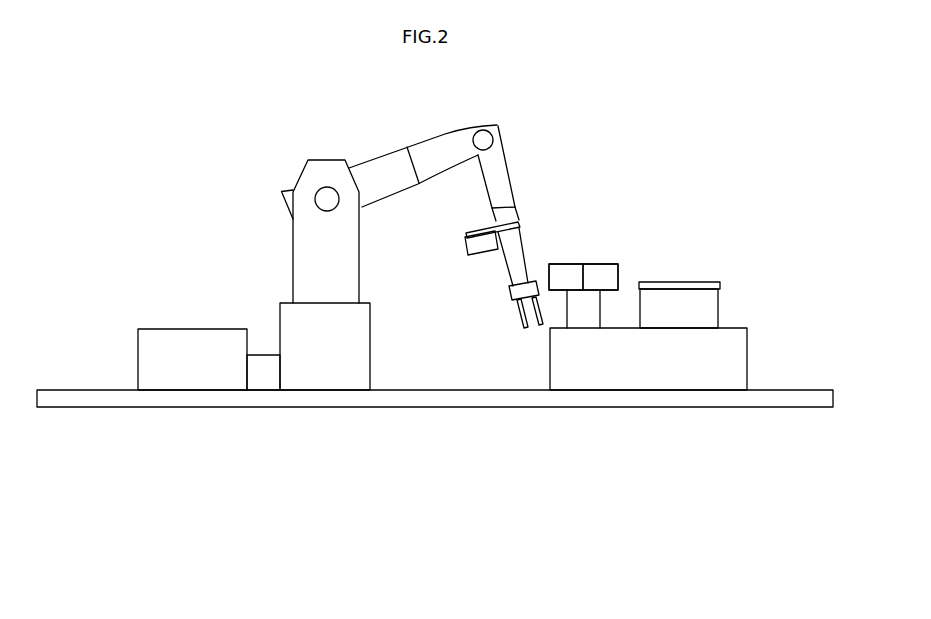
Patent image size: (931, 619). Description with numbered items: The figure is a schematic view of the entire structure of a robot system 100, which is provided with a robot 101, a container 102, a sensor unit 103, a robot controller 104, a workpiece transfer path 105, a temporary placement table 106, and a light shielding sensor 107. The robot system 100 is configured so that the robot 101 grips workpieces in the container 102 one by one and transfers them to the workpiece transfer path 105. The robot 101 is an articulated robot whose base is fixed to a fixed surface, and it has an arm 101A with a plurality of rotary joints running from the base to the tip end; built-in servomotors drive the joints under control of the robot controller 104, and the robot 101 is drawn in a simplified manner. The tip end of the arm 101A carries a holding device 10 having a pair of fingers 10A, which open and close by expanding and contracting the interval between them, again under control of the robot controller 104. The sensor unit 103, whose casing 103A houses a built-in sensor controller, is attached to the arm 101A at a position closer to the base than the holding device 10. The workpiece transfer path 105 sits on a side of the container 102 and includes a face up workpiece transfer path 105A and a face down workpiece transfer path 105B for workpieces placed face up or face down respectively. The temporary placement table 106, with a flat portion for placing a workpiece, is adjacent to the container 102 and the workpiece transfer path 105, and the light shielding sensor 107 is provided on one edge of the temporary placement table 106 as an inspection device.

The robot system 100 is at (340, 470).
The robot 101 is at (348, 148).
The arm 101A is at (507, 178).
The container 102 is at (550, 350).
The sensor unit 103 is at (470, 253).
The casing 103A is at (466, 237).
The holding device 10 is at (510, 290).
The fingers 10A is at (520, 317).
The robot controller 104 is at (138, 355).
The workpiece transfer path 105 is at (590, 250).
The face up workpiece transfer path 105A is at (557, 265).
The face down workpiece transfer path 105B is at (615, 263).
The temporary placement table 106 is at (720, 298).
The light shielding sensor 107 is at (713, 281).